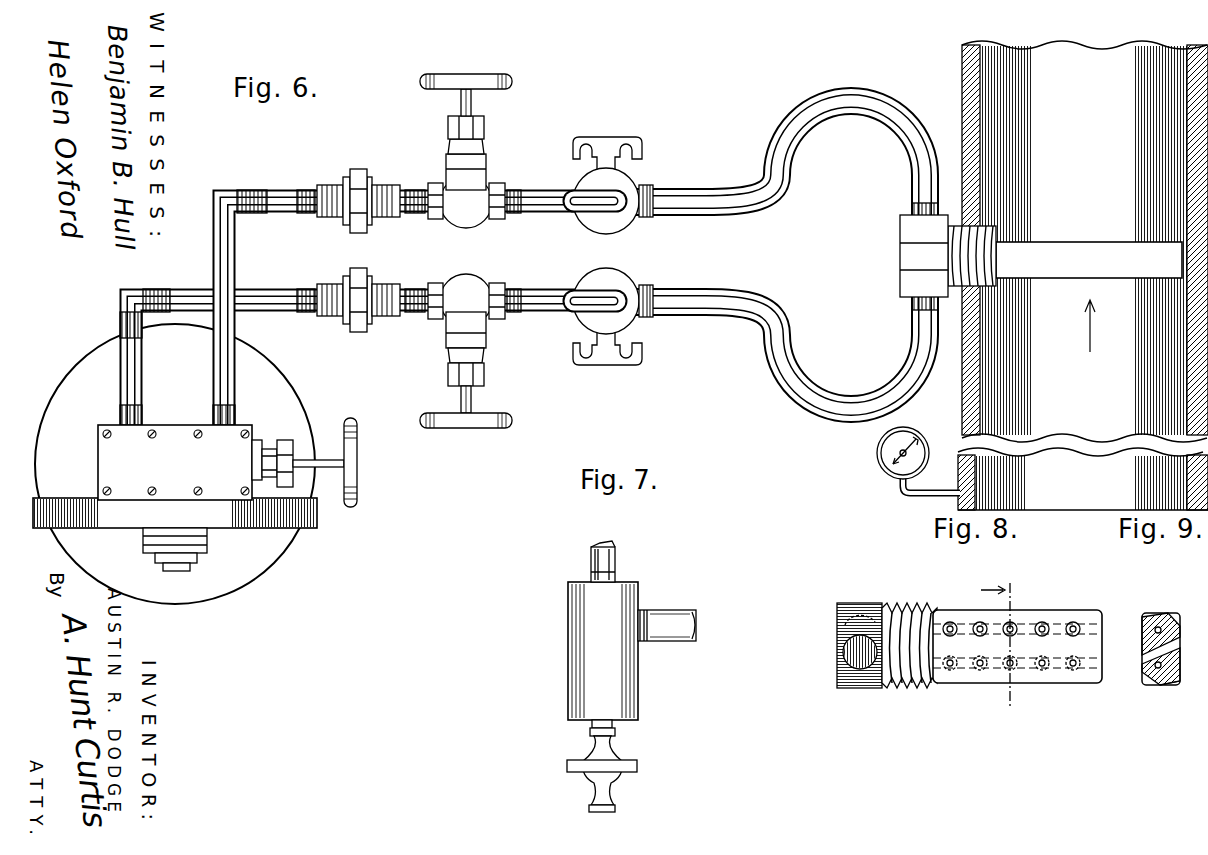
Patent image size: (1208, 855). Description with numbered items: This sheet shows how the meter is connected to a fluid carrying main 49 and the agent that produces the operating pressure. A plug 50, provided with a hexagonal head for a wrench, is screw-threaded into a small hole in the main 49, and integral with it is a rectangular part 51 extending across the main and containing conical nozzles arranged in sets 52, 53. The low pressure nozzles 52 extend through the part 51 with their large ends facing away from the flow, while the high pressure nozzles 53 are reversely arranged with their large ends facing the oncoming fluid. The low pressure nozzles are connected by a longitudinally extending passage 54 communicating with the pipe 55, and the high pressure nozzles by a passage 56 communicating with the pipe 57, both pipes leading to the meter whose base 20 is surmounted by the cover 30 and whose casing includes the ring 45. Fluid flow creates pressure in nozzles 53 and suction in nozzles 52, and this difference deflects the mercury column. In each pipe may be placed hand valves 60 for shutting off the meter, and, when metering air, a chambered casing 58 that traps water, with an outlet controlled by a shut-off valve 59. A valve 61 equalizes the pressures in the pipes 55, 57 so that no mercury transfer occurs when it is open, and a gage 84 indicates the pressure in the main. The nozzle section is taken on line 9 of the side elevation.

In FIG. 6, the base of the vessel 20 is at (175, 464).
In FIG. 6, the cover 30 is at (175, 462).
In FIG. 6, the ring 45 is at (195, 534).
In FIG. 6, the valve 61 is at (292, 441).
In FIG. 6, the hand valves 60 is at (476, 281).
In FIG. 6, the chambered casing 58 is at (624, 280).
In FIG. 7, the chambered casing 58 is at (587, 612).
In FIG. 6, the pipe 57 is at (848, 118).
In FIG. 6, the pipe 55 is at (843, 427).
In FIG. 7, the pipe 55 is at (675, 610).
In FIG. 6, the plug 50 is at (906, 245).
In FIG. 8, the plug 50 is at (840, 628).
In FIG. 6, the main 49 is at (1074, 275).
In FIG. 6, the rectangular part 51 is at (1089, 260).
In FIG. 8, the rectangular part 51 is at (951, 620).
In FIG. 6, the gage 84 is at (888, 464).
In FIG. 7, the shut-off valve 59 is at (612, 756).
In FIG. 8, the high pressure nozzles 53 is at (1043, 621).
In FIG. 9, the high pressure nozzles 53 is at (1172, 631).
In FIG. 8, the low pressure nozzles 52 is at (1042, 672).
In FIG. 9, the low pressure nozzles 52 is at (1150, 668).
In FIG. 9, the passage 56 is at (1157, 625).
In FIG. 9, the passage 54 is at (1163, 684).
In FIG. 8, the section line 9- 9 is at (997, 642).